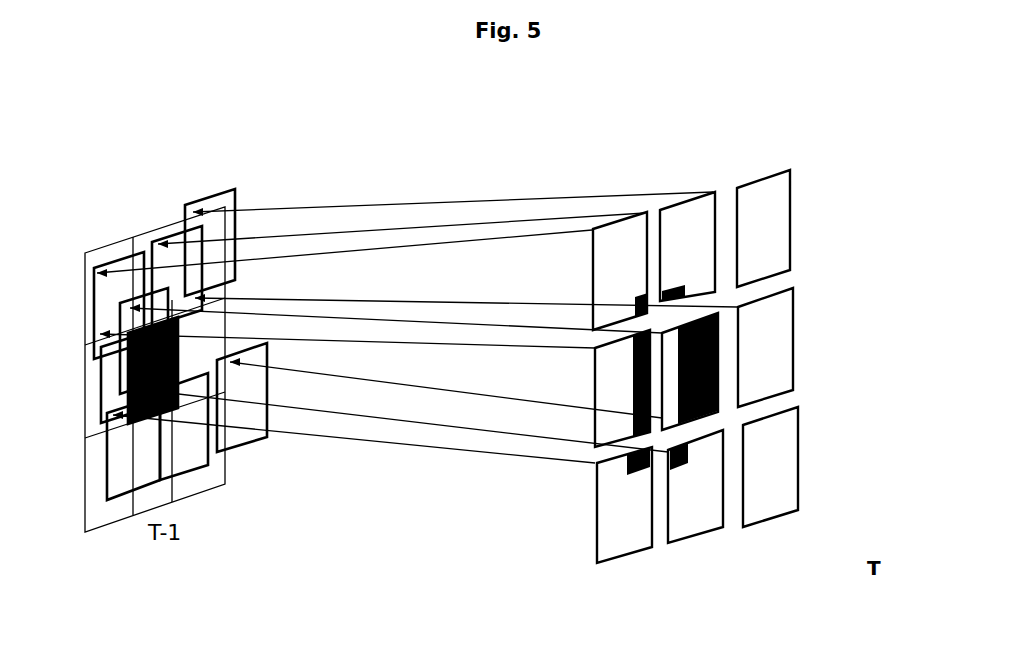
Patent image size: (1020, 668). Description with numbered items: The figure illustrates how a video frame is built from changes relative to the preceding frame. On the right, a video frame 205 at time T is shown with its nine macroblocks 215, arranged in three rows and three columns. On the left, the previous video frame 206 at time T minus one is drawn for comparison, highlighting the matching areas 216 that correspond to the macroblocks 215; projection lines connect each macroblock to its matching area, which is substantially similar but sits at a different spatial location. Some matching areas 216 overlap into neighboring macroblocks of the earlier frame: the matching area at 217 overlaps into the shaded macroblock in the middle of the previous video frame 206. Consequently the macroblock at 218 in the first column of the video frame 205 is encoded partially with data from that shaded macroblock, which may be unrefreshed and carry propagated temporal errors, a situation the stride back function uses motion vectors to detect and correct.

The video frame 205 is at (672, 162).
The previous video frame 206 is at (128, 190).
The macroblocks 215 is at (778, 197).
The matching areas 216 is at (228, 187).
The matching area 217 is at (112, 296).
The macroblock 218 is at (623, 252).